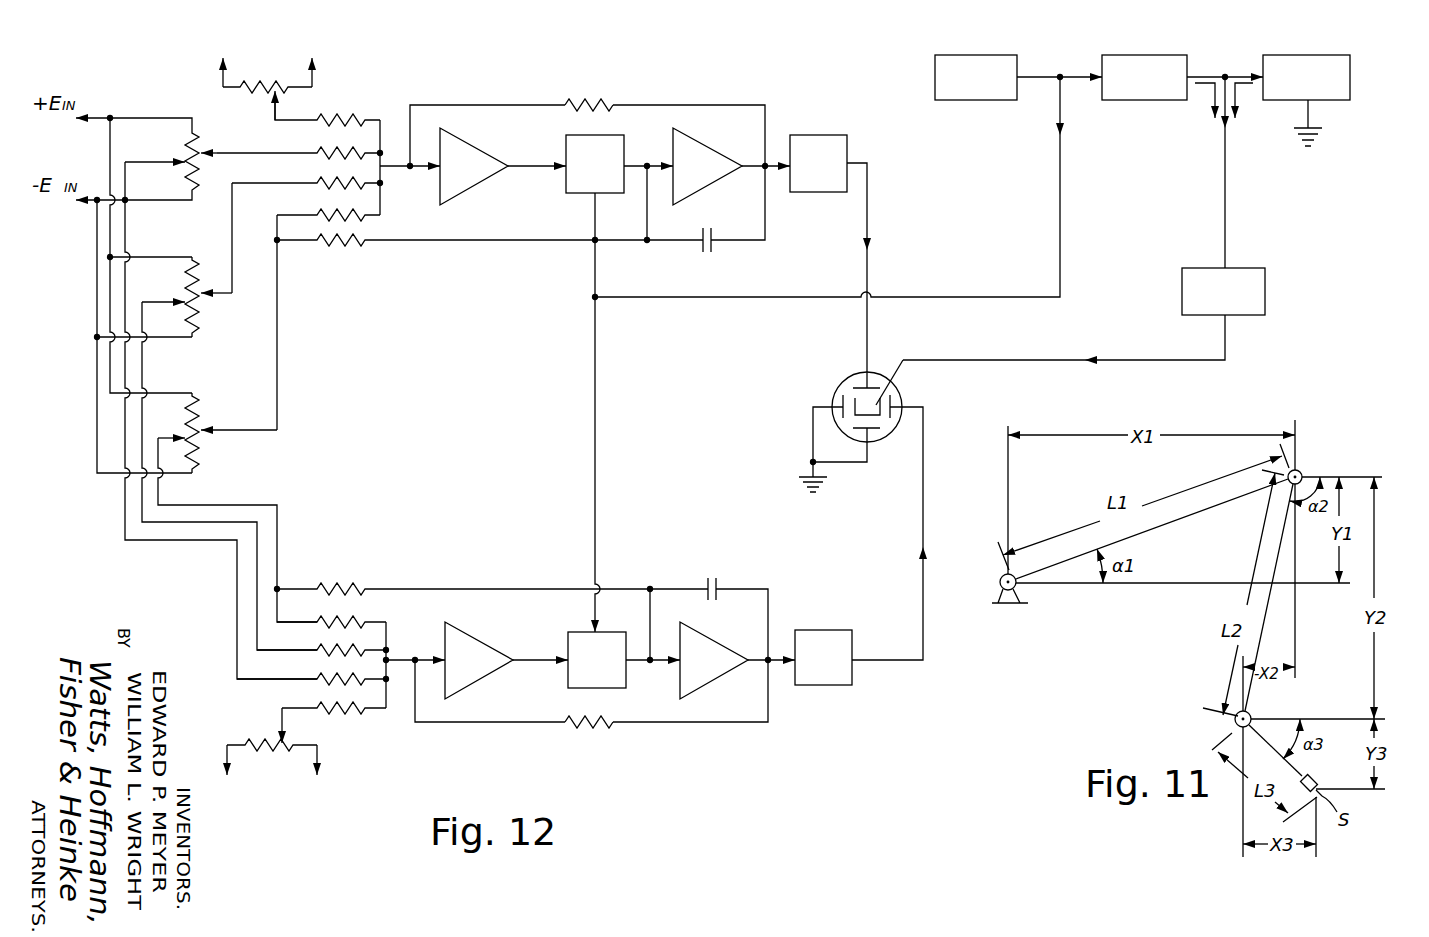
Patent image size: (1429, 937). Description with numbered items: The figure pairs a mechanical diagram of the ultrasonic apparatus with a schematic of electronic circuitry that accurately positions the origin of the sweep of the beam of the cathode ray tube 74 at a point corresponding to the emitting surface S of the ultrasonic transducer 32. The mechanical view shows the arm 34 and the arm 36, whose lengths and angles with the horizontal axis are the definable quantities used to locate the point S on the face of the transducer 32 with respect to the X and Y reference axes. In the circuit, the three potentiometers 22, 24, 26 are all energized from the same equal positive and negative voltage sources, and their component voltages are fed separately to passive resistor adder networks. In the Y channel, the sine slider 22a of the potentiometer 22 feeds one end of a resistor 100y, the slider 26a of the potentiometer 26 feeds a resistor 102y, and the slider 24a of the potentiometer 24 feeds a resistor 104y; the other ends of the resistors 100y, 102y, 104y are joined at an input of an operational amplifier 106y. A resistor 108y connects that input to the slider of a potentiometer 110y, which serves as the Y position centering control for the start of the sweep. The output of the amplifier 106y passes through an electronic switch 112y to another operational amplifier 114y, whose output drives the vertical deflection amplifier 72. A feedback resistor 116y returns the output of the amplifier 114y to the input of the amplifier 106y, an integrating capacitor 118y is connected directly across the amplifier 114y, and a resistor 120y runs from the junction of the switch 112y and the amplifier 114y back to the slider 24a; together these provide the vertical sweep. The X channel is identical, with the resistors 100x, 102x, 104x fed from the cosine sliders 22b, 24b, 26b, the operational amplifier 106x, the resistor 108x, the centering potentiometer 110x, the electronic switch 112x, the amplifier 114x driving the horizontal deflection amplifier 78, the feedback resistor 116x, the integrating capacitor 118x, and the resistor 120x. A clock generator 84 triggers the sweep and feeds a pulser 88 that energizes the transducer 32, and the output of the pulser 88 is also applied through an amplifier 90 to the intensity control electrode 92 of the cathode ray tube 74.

In FIG. 12, the potentiometer 22 is at (197, 131).
In FIG. 12, the sine slider 22a is at (221, 150).
In FIG. 12, the cosine slider 22b is at (152, 160).
In FIG. 12, the potentiometer 24 is at (205, 445).
In FIG. 12, the slider 24a is at (226, 428).
In FIG. 12, the cosine slider 24b is at (166, 437).
In FIG. 12, the potentiometer 26 is at (200, 325).
In FIG. 12, the sine slider 26a is at (222, 296).
In FIG. 12, the cosine slider 26b is at (162, 300).
In FIG. 12, the transducer 32 is at (1340, 101).
In FIG. 11, the arm 34 is at (1186, 520).
In FIG. 11, the arm 36 is at (1267, 613).
In FIG. 12, the vertical deflection amplifier 72 is at (815, 134).
In FIG. 12, the cathode ray tube 74 is at (835, 385).
In FIG. 12, the horizontal deflection amplifier 78 is at (816, 629).
In FIG. 12, the clock generator 84 is at (969, 101).
In FIG. 12, the pulser 88 is at (1143, 101).
In FIG. 12, the amplifier 90 is at (1265, 286).
In FIG. 12, the intensity control electrode 92 is at (905, 370).
In FIG. 12, the resistor 100y is at (316, 156).
In FIG. 12, the resistor 102y is at (316, 186).
In FIG. 12, the resistor 104y is at (368, 216).
In FIG. 12, the operational amplifier 106y is at (468, 140).
In FIG. 12, the resistor 108y is at (333, 116).
In FIG. 12, the potentiometer 110y is at (270, 84).
In FIG. 12, the electronic switch 112y is at (566, 190).
In FIG. 12, the operational amplifier 114y is at (700, 140).
In FIG. 12, the feedback resistor 116y is at (585, 100).
In FIG. 12, the integrating capacitor 118y is at (706, 254).
In FIG. 12, the resistor 120y is at (350, 250).
In FIG. 12, the resistor 100x is at (317, 678).
In FIG. 12, the resistor 102x is at (317, 649).
In FIG. 12, the resistor 104x is at (365, 621).
In FIG. 12, the operational amplifier 106x is at (478, 630).
In FIG. 12, the resistor 108x is at (352, 714).
In FIG. 12, the potentiometer 110x is at (270, 736).
In FIG. 12, the electronic switch 112x is at (568, 686).
In FIG. 12, the operational amplifier 114x is at (700, 630).
In FIG. 12, the feedback resistor 116x is at (598, 728).
In FIG. 12, the integrating capacitor 118x is at (708, 577).
In FIG. 12, the resistor 120x is at (340, 583).